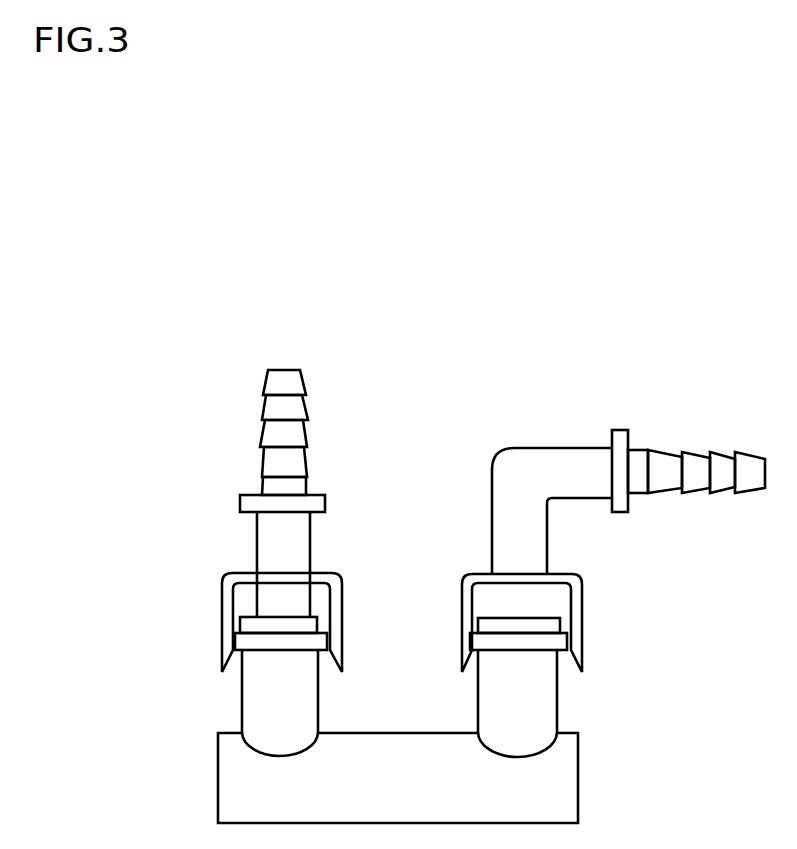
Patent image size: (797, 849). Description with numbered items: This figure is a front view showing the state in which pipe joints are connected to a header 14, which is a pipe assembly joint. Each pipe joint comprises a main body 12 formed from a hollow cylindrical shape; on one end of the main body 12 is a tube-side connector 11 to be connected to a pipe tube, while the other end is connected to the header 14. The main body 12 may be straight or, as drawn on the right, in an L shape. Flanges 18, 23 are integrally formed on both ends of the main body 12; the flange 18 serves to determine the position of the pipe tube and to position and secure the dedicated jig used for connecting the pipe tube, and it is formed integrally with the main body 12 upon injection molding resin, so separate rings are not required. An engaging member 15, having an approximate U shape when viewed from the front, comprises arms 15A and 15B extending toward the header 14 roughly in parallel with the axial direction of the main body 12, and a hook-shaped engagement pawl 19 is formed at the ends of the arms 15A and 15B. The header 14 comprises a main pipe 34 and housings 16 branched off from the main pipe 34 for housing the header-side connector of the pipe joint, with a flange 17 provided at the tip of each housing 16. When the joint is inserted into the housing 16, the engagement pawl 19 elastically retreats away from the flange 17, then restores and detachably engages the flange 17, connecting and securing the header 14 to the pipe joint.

The tube-side connector 11 is at (262, 418).
The main body 12 is at (312, 545).
The header 14 is at (578, 808).
The engaging member 15 is at (222, 583).
The arm 15A is at (336, 600).
The arm 15B is at (222, 602).
The housing 16 is at (255, 708).
The flange 17 is at (233, 640).
The flange 18 is at (242, 503).
The engagement pawl 19 is at (222, 653).
The flange 23 is at (238, 623).
The main pipe 34 is at (558, 765).